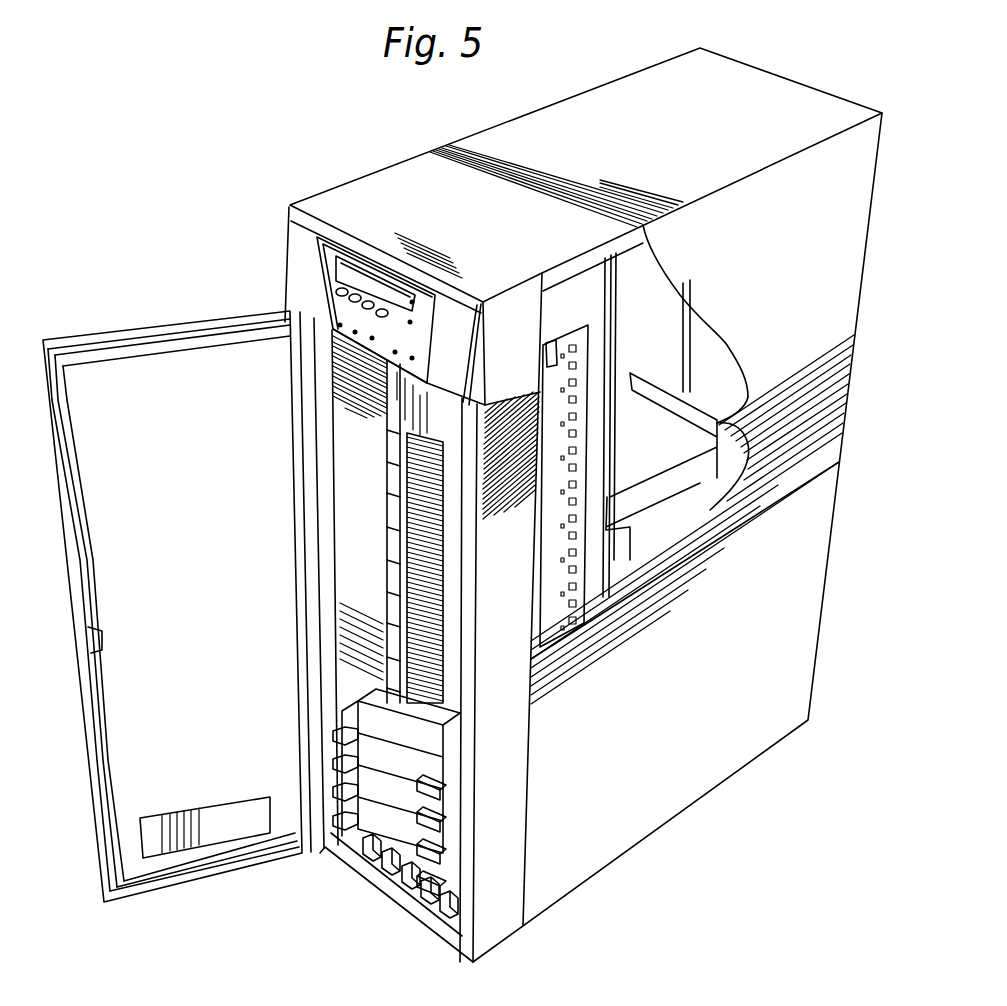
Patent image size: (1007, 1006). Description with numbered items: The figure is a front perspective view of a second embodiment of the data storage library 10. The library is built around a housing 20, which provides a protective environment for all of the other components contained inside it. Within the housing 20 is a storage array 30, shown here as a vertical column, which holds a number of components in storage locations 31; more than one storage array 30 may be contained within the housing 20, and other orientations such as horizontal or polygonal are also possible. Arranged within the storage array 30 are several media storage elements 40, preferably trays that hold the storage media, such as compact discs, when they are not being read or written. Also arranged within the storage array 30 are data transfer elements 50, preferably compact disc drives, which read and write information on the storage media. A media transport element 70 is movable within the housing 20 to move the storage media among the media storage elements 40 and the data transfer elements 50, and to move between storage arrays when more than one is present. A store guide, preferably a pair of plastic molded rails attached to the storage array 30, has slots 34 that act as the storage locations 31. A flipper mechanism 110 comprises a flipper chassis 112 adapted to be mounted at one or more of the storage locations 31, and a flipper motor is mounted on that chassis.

The data storage library 10 is at (301, 124).
The housing 20 is at (863, 157).
The storage array 30 is at (453, 768).
The storage locations 31 is at (443, 707).
The slots 34 is at (587, 376).
The media storage elements 40 is at (405, 438).
The data transfer elements 50 is at (380, 820).
The media transport element 70 is at (687, 430).
The flipper mechanism 110 is at (392, 383).
The flipper chassis 112 is at (289, 292).